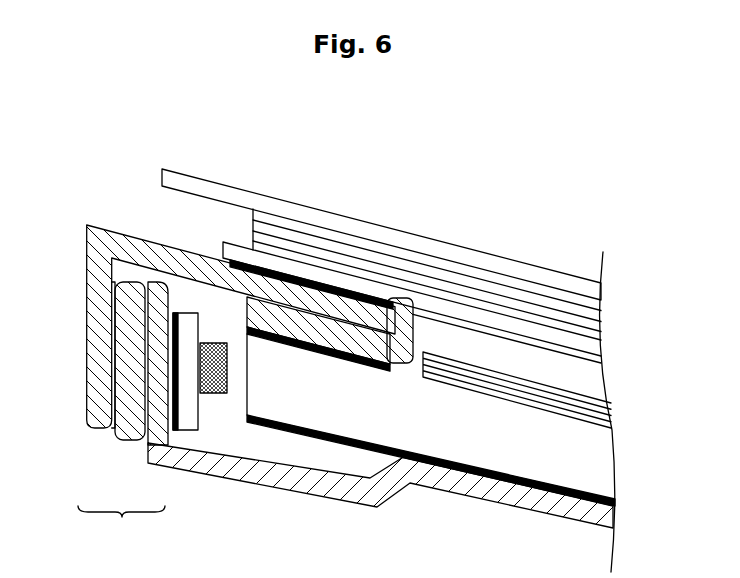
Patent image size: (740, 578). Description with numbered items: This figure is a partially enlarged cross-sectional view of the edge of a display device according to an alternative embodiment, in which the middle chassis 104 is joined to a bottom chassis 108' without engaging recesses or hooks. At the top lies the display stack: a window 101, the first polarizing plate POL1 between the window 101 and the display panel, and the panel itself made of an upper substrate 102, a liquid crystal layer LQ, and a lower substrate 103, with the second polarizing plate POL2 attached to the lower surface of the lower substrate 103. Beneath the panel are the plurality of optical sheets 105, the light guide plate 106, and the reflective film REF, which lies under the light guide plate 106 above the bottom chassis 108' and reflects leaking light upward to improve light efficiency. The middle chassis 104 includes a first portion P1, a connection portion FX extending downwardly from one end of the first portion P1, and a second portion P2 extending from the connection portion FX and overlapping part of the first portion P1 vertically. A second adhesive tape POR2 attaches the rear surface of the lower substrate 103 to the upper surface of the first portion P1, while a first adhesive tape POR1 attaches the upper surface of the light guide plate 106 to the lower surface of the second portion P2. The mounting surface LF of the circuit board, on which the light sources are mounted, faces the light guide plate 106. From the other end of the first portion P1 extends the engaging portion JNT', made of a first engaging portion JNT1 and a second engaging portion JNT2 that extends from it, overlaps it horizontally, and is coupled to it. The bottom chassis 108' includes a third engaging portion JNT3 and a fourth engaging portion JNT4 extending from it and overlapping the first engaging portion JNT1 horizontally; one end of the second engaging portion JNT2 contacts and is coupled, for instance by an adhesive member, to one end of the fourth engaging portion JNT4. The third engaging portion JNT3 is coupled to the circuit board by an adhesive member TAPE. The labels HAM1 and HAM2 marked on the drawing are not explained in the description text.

The middle chassis 104 is at (84, 221).
The first adhesive member HAM1 is at (98, 300).
The adhesive member TAPE is at (112, 350).
The second adhesive member HAM2 is at (128, 380).
The first engaging portion JNT1 is at (97, 422).
The second engaging portion JNT2 is at (127, 432).
The engaging portion JNT' is at (121, 520).
The third engaging portion JNT3 is at (158, 288).
The fourth engaging portion JNT4 is at (122, 282).
The mounting surface LF is at (197, 328).
The first portion P1 is at (238, 277).
The second portion P2 is at (313, 317).
The first adhesive tape POR1 is at (352, 330).
The second adhesive tape POR2 is at (292, 242).
The connection portion FX is at (412, 322).
The window 101 is at (604, 283).
The first polarizing plate POL1 is at (604, 298).
The upper substrate 102 is at (604, 313).
The liquid crystal layer LQ is at (604, 327).
The lower substrate 103 is at (604, 340).
The second polarizing plate POL2 is at (604, 357).
The optical sheets 105 is at (188, 430).
The light guide plate 106 is at (610, 456).
The reflective film REF is at (618, 503).
The bottom chassis 108' is at (380, 488).